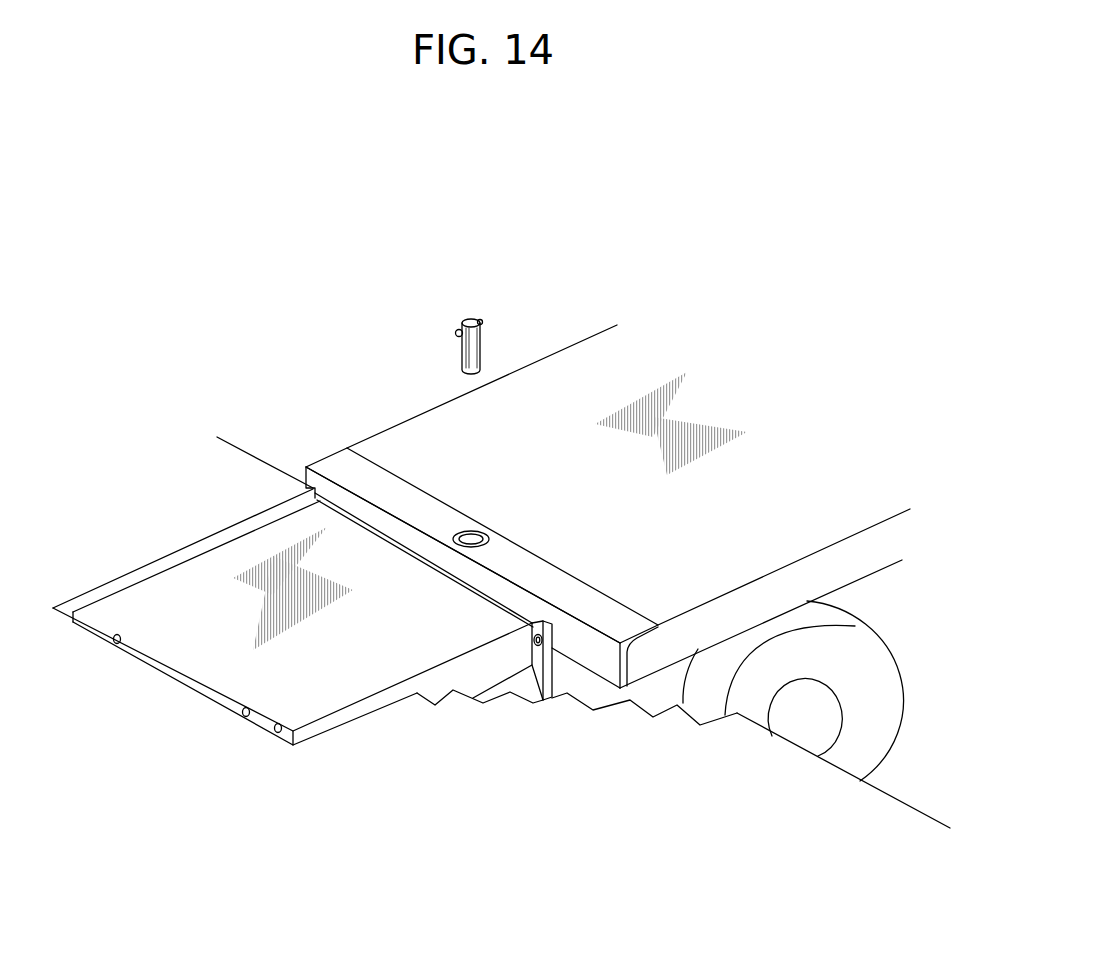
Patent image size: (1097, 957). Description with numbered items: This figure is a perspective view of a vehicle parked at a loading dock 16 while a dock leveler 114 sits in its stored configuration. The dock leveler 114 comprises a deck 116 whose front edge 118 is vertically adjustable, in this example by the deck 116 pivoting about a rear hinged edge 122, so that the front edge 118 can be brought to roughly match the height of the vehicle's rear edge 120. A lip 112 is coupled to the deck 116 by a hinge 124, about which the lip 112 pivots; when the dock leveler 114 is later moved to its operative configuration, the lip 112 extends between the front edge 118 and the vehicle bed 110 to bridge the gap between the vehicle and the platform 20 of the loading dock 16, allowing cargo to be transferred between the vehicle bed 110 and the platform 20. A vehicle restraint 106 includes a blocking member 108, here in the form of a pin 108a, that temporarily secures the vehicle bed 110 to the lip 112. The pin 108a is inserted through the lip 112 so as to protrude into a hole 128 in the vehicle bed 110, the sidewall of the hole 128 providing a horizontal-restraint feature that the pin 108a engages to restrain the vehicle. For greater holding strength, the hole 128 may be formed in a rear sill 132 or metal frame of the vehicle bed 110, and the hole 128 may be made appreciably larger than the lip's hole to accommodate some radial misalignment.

The loading dock 16 is at (284, 430).
The platform 20 is at (257, 485).
The vehicle restraint 106 is at (525, 287).
The blocking member 108 is at (481, 354).
The pin 108a is at (481, 332).
The vehicle bed 110 is at (389, 447).
The lip 112 is at (493, 694).
The dock leveler 114 is at (481, 669).
The deck 116 is at (292, 618).
The front edge 118 is at (484, 578).
The rear edge 120 is at (593, 678).
The rear hinged edge 122 is at (165, 667).
The hinge 124 is at (530, 638).
The hole 128 is at (469, 530).
The rear sill 132 is at (602, 617).